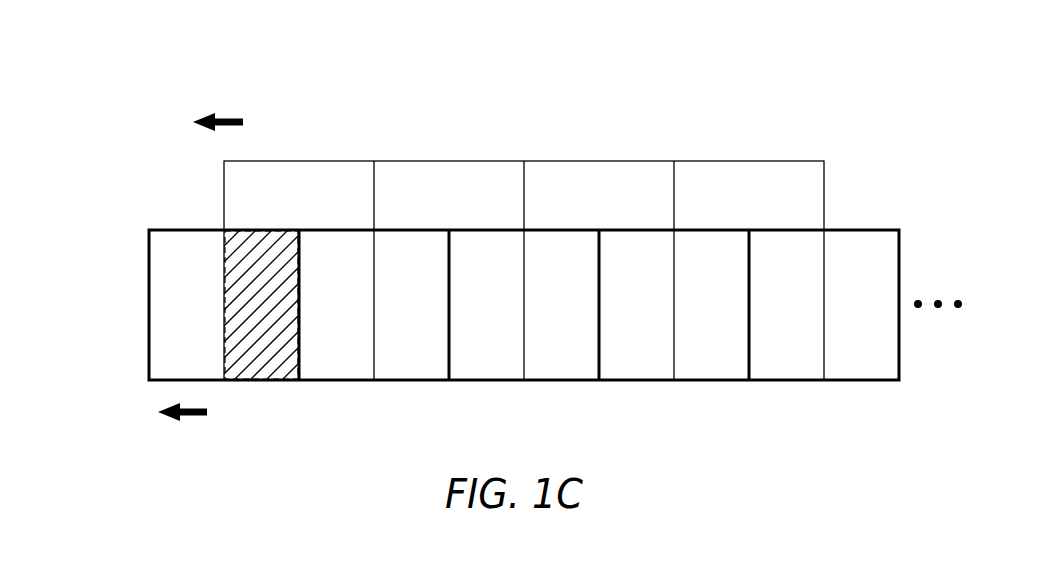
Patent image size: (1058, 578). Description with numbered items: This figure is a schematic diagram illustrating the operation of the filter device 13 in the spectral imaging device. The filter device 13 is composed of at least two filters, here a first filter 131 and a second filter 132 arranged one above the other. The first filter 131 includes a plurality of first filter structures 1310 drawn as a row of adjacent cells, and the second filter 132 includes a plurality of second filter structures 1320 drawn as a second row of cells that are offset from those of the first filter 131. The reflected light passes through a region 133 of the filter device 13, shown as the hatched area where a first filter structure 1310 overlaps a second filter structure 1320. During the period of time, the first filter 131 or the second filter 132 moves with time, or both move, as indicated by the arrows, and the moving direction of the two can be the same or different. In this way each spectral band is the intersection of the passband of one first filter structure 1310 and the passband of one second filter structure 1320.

The filter device 13 is at (502, 229).
The first filter 131 is at (147, 351).
The first filter structures 1310 is at (196, 318).
The second filter 132 is at (452, 161).
The second filter structures 1320 is at (271, 208).
The region 133 is at (266, 382).